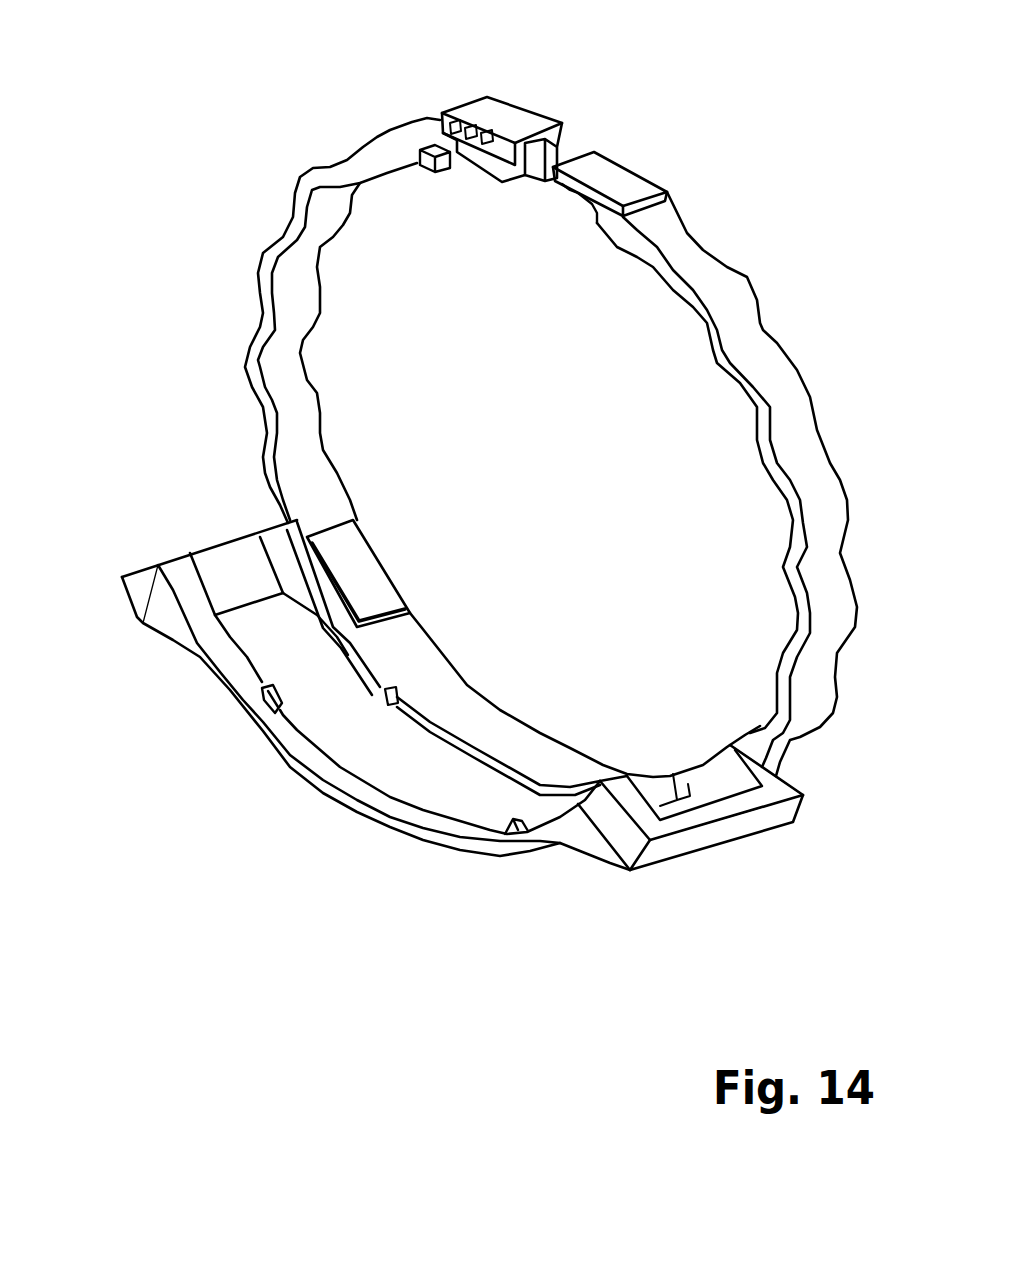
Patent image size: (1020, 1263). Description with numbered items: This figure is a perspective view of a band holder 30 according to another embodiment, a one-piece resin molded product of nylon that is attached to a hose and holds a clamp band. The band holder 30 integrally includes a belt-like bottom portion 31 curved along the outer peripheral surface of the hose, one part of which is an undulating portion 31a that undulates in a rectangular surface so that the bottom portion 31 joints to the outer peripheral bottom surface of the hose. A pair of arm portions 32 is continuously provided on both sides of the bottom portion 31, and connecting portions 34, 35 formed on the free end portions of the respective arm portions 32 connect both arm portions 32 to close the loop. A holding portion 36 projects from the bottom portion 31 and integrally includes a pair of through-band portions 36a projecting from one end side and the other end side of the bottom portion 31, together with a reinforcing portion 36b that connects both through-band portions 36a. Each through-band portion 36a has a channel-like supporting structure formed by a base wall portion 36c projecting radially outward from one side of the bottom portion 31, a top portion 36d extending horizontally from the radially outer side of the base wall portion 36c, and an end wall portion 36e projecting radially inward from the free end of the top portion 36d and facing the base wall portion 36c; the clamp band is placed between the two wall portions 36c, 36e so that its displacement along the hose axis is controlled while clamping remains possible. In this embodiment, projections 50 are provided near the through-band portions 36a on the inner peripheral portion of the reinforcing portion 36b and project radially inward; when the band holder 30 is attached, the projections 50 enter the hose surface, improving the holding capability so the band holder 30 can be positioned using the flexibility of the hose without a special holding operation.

The band holder 30 is at (762, 186).
The bottom portion 31 is at (465, 707).
The undulating portion 31a is at (365, 568).
The arm portions 32 is at (268, 316).
The connecting portion 34 is at (635, 163).
The connecting portion 35 is at (519, 104).
The holding portion 36 is at (400, 825).
The through-band portions 36a is at (273, 540).
The reinforcing portion 36b is at (230, 557).
The base wall portion 36c is at (773, 777).
The top portion 36d is at (742, 827).
The end wall portion 36e is at (147, 597).
The projections 50 is at (262, 693).